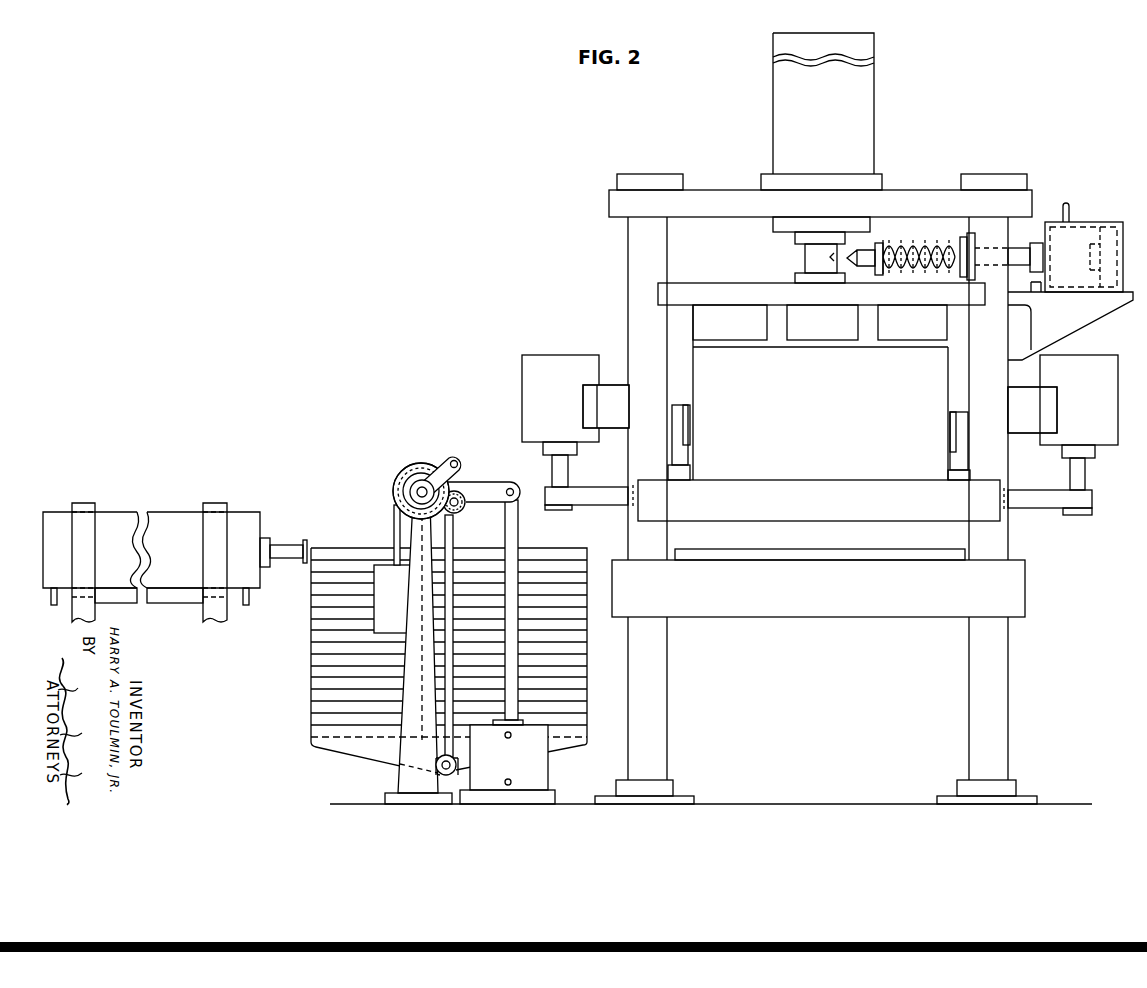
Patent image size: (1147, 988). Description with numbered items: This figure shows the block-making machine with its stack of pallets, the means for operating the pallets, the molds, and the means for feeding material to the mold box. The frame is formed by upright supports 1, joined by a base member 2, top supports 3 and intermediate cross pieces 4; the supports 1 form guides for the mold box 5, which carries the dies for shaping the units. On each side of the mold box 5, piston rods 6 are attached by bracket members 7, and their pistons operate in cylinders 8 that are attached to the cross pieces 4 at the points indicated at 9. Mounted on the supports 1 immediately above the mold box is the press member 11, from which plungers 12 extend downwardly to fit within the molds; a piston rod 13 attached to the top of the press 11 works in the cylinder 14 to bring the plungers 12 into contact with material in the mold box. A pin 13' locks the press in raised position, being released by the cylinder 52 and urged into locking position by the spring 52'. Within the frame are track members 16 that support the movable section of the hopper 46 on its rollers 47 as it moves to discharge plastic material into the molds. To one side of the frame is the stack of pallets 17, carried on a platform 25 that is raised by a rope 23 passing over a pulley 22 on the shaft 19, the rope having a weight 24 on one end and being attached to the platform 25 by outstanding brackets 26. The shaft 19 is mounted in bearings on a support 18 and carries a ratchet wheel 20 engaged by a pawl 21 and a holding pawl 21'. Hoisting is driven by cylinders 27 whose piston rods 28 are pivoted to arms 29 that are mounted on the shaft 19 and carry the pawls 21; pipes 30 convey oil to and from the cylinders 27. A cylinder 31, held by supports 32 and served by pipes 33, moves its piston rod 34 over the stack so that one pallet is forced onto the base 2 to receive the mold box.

The frame or supports 1 is at (667, 700).
The base member 2 is at (810, 617).
The top supports 3 is at (912, 197).
The intermediate cross pieces 4 is at (615, 385).
The mold box 5 is at (840, 490).
The piston rods 6 is at (568, 470).
The bracket members 7 is at (605, 505).
The cylinders 8 is at (548, 352).
The attachment of cylinders 9 is at (583, 402).
The press member 11 is at (716, 292).
The plungers 12 is at (838, 335).
The piston rod 13 is at (816, 250).
The pin 13' is at (877, 209).
The cylinder 14 is at (875, 85).
The track members 16 is at (680, 472).
The pallets 17 is at (823, 555).
The support 18 is at (398, 775).
The shaft 19 is at (410, 492).
The ratchet wheel 20 is at (405, 478).
The pawl 21 is at (467, 478).
The holding pawl 21' is at (441, 459).
The pulley 22 is at (416, 462).
The rope 23 is at (455, 528).
The weight 24 is at (388, 570).
The platform 25 is at (360, 748).
The outstanding brackets 26 is at (457, 762).
The cylinders 27 is at (550, 768).
The piston rods 28 is at (522, 530).
The arms 29 is at (490, 482).
The pipes 30 is at (511, 737).
The cylinder 31 is at (163, 512).
The supports 32 is at (85, 503).
The pipes 33 is at (54, 605).
The piston rod 34 is at (285, 538).
The movable section of the hopper 46 is at (935, 365).
The rollers 47 is at (688, 418).
The cylinder 52 is at (1070, 276).
The spring 52' is at (963, 212).